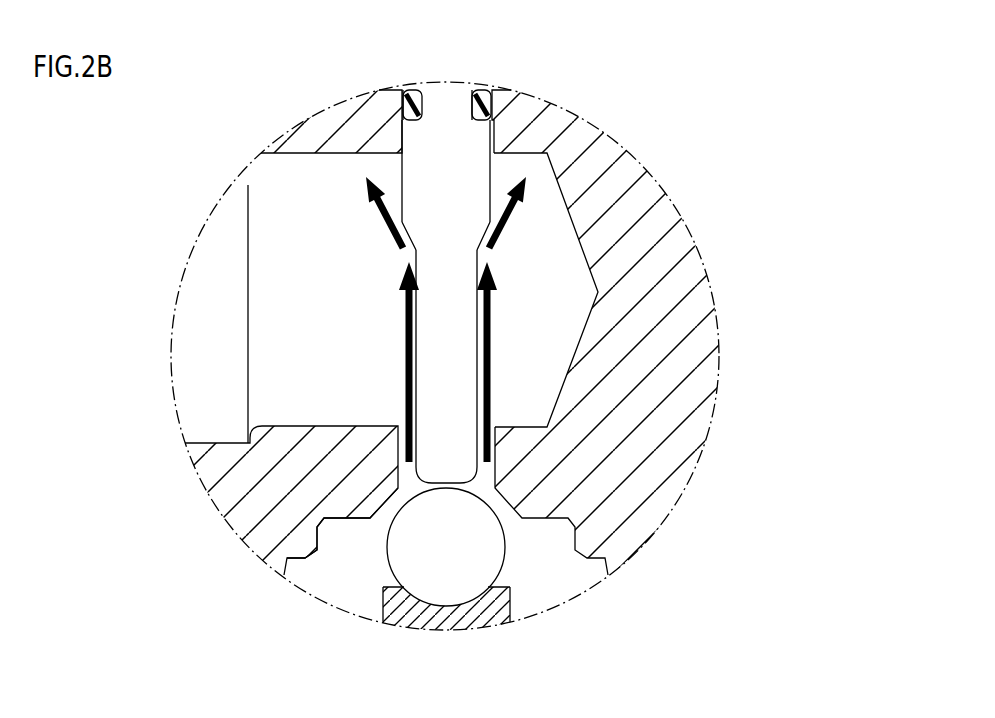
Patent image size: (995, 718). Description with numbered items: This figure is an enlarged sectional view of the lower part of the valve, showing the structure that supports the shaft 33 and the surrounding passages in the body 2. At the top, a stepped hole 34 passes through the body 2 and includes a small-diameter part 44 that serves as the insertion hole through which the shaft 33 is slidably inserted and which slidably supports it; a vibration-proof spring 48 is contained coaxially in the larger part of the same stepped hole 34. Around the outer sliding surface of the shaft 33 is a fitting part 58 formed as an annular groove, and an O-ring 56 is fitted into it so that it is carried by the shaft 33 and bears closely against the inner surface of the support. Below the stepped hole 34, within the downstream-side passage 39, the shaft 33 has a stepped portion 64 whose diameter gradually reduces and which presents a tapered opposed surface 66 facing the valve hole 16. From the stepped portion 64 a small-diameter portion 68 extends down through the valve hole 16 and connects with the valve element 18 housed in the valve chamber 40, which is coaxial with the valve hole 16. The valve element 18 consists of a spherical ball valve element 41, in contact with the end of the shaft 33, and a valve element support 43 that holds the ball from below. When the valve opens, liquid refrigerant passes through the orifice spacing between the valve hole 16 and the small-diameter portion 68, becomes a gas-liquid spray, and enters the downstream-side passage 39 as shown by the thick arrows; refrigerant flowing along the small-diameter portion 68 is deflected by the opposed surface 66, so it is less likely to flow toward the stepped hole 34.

The body 2 is at (598, 143).
The shaft 33 is at (492, 183).
The stepped hole 34 is at (301, 117).
The small-diameter part 44 is at (400, 100).
The vibration-proof spring 48 is at (398, 132).
The O-ring 56 is at (493, 107).
The fitting part 58 is at (494, 93).
The opposed surface 66 is at (490, 225).
The stepped portion 64 is at (498, 251).
The small-diameter portion 68 is at (480, 293).
The downstream-side passage 39 is at (297, 185).
The valve hole 16 is at (400, 452).
The valve chamber 40 is at (323, 583).
The valve element 18 is at (358, 588).
The ball valve element 41 is at (397, 565).
The valve element support 43 is at (387, 602).